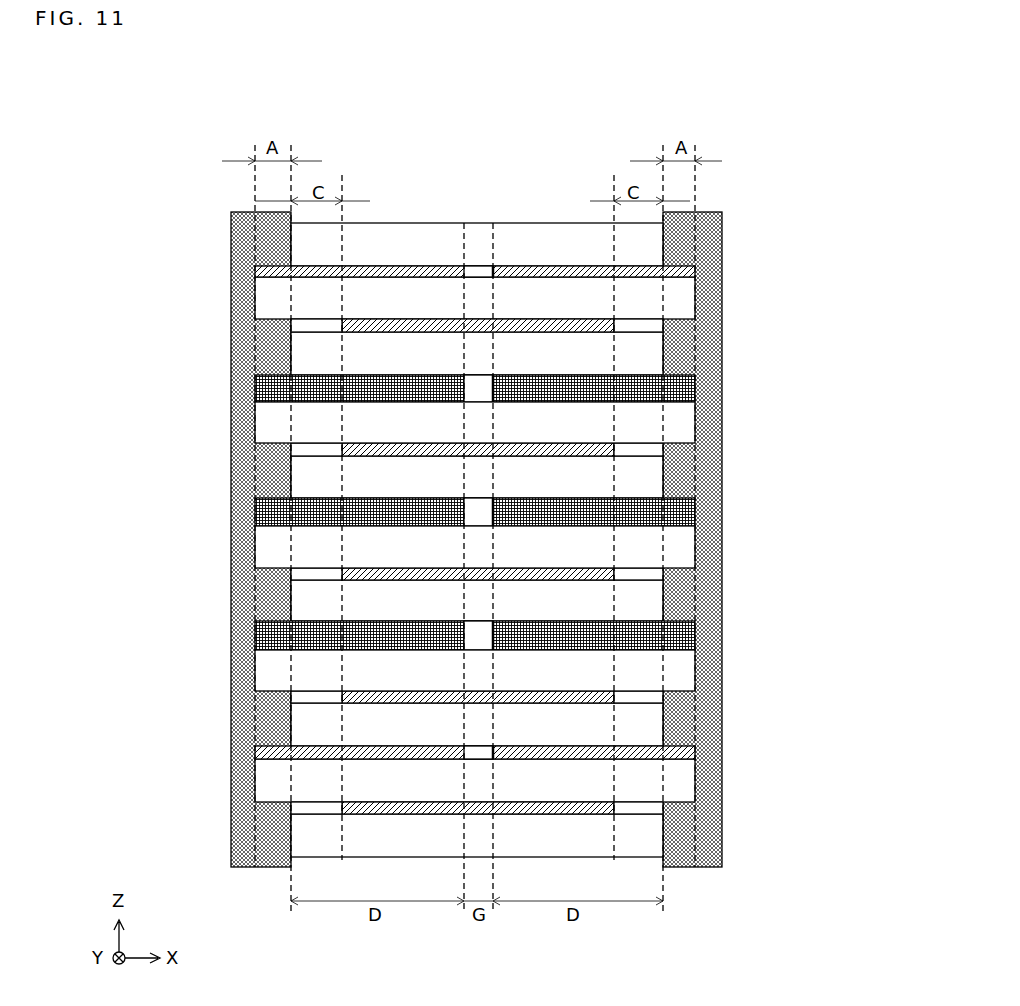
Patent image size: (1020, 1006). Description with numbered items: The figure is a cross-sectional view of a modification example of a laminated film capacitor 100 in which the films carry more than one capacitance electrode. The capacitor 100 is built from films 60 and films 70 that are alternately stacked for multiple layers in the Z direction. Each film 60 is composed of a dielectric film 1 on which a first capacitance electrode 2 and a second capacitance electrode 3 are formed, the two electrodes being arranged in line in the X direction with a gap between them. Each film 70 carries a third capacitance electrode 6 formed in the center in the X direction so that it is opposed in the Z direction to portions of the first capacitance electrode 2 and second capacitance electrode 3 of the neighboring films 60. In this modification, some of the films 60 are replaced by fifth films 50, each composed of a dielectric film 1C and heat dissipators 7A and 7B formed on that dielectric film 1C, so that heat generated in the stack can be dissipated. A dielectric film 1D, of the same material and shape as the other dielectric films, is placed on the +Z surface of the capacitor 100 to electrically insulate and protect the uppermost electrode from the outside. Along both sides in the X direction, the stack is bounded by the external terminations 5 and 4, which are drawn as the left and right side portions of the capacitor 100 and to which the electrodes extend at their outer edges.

The laminated film capacitor 100 is at (795, 146).
The dielectric film 1D is at (693, 231).
The film 60 is at (150, 285).
The second capacitance electrode 3 is at (503, 270).
The first capacitance electrode 2 is at (262, 273).
The dielectric film 1 is at (262, 300).
The fifth film 50 is at (150, 345).
The heat dissipator 7B is at (503, 392).
The heat dissipator 7A is at (265, 397).
The dielectric film 1C is at (268, 427).
The third capacitance electrode 6 is at (614, 326).
The film 70 is at (794, 303).
The external electrode 5 is at (238, 848).
The external electrode 4 is at (716, 850).